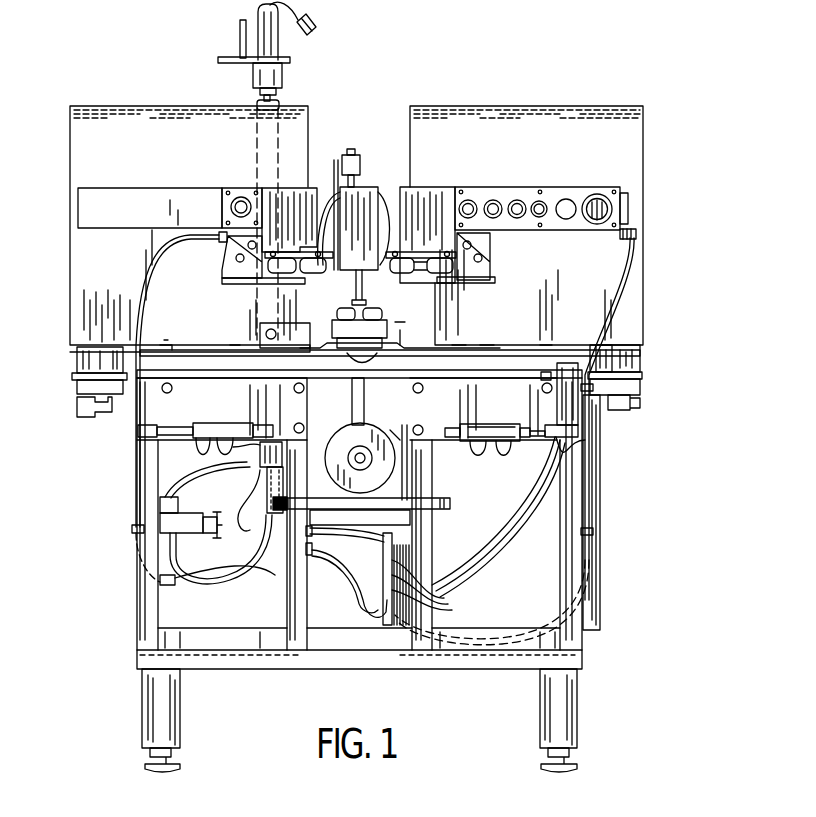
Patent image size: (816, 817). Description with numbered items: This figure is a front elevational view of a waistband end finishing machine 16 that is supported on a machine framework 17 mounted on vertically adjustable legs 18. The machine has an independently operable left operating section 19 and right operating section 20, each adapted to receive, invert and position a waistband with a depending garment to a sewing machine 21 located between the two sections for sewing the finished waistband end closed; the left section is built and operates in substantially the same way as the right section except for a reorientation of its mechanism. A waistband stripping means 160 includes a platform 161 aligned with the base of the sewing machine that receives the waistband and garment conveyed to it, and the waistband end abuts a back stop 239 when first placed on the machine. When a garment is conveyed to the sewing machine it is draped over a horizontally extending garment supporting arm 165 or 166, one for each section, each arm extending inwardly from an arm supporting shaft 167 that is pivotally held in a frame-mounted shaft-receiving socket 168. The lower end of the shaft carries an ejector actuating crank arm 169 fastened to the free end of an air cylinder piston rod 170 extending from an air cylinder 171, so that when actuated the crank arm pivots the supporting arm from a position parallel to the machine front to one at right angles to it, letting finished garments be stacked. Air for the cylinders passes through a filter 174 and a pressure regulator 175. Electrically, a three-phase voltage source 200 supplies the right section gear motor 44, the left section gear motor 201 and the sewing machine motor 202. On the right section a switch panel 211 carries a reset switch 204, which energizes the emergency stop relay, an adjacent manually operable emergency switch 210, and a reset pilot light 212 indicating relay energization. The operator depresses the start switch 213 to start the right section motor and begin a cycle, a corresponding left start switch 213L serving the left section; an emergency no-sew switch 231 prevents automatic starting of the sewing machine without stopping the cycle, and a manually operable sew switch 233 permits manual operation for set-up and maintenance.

The waistband end finishing machine 16 is at (560, 207).
The machine framework 17 is at (582, 642).
The vertically adjustable legs 18 is at (570, 700).
The left operating section 19 is at (82, 258).
The right operating section 20 is at (640, 268).
The sewing machine 21 is at (362, 215).
The right section gear motor 44 is at (637, 358).
The waistband stripping means 160 is at (327, 315).
The platform 161 is at (386, 330).
The garment supporting arm 165 is at (438, 355).
The garment supporting arm 166 is at (205, 347).
The arm supporting shaft 167 is at (135, 347).
The shaft-receiving socket 168 is at (565, 407).
The ejector actuating crank arm 169 is at (558, 438).
The air cylinder piston rod 170 is at (567, 432).
The air cylinder 171 is at (482, 428).
The filter 174 is at (157, 573).
The pressure regulator 175 is at (187, 527).
The three-phase voltage source 200 is at (313, 21).
The left section gear motor 201 is at (93, 380).
The sewing machine motor 202 is at (380, 468).
The reset switch 204 is at (539, 202).
The emergency switch 210 is at (596, 200).
The switch panel 211 is at (553, 224).
The reset pilot light 212 is at (566, 201).
The start switch 213 is at (464, 202).
The start switch 213L is at (243, 197).
The emergency no-sew switch 231 is at (517, 202).
The sew switch 233 is at (492, 202).
The back stop 239 is at (410, 188).